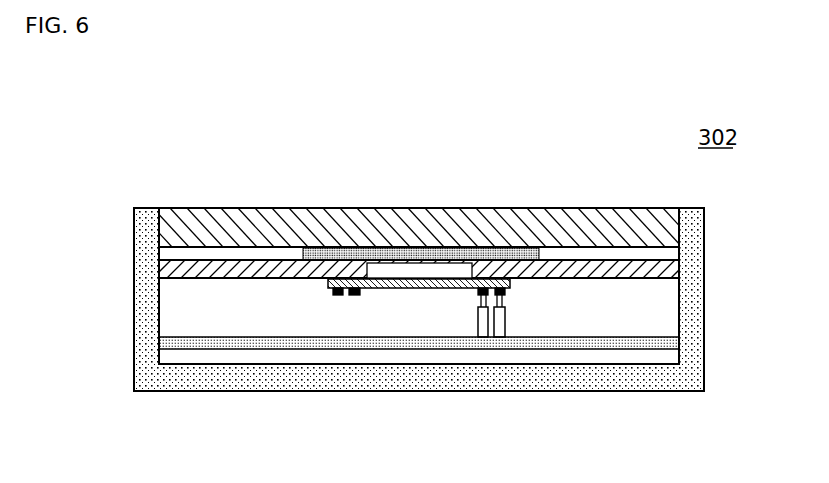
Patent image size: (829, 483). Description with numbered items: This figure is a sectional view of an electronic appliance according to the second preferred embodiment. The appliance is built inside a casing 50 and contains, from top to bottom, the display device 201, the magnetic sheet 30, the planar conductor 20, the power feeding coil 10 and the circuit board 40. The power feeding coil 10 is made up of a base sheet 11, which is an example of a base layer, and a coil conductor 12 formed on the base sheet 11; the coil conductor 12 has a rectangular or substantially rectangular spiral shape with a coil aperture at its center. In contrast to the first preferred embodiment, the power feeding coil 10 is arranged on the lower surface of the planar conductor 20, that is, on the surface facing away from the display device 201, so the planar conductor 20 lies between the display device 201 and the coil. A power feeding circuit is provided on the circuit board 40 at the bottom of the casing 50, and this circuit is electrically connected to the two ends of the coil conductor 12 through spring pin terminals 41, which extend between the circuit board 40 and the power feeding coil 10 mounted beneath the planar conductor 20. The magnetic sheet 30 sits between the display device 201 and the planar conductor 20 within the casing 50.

The display device 201 is at (338, 222).
The magnetic sheet 30 is at (420, 255).
The planar conductor 20 is at (607, 268).
The power feeding coil 10 is at (427, 308).
The base sheet 11 is at (417, 288).
The coil conductor 12 is at (354, 296).
The spring pin terminals 41 is at (506, 323).
The circuit board 40 is at (447, 343).
The casing 50 is at (697, 300).